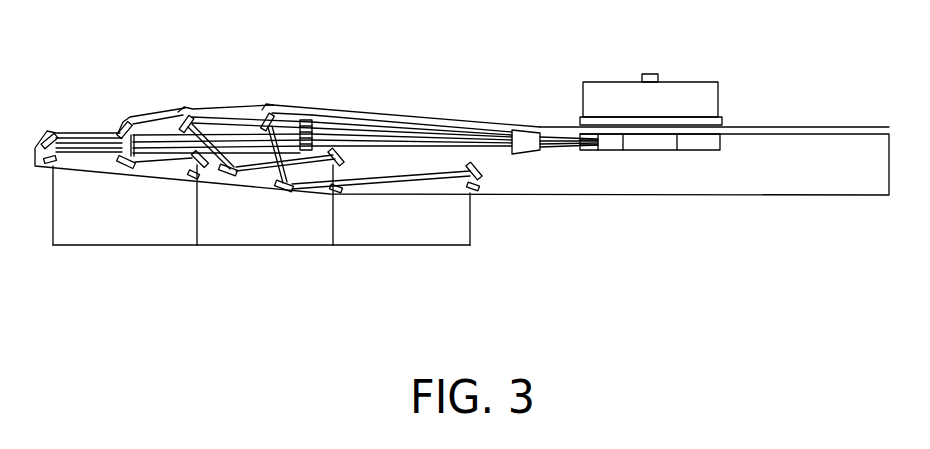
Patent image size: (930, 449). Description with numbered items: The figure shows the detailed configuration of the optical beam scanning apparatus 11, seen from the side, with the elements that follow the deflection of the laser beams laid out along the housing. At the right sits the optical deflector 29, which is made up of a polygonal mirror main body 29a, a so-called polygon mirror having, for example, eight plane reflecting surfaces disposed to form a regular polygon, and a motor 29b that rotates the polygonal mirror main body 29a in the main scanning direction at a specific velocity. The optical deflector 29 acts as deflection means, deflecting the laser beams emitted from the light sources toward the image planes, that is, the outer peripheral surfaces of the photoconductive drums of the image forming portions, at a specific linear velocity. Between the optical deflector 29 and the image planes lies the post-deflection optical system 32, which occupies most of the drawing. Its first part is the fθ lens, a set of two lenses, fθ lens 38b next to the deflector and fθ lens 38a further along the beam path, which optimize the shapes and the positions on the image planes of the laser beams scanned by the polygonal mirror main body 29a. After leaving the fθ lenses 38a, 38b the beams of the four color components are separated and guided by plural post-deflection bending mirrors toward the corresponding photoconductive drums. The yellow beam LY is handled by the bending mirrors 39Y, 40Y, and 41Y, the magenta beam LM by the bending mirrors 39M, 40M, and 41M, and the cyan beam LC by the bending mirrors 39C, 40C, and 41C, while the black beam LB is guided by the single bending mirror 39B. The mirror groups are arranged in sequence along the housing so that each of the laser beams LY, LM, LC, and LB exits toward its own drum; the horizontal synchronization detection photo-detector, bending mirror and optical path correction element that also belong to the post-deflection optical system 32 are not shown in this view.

The post-deflection optical system 32 is at (437, 33).
The optical deflector 29 is at (683, 86).
The polygonal mirror main body 29a is at (720, 143).
The motor 29b is at (720, 97).
The optical beam scanning apparatus 11 is at (829, 127).
The fθ lens 38a is at (305, 120).
The fθ lens 38b is at (527, 130).
The post-deflection bending mirror 39B is at (42, 135).
The post-deflection bending mirror 39C is at (119, 121).
The post-deflection bending mirror 39M is at (184, 110).
The post-deflection bending mirror 39Y is at (266, 112).
The post-deflection bending mirror 40C is at (122, 167).
The post-deflection bending mirror 41C is at (188, 161).
The post-deflection bending mirror 40M is at (225, 174).
The post-deflection bending mirror 40Y is at (283, 191).
The post-deflection bending mirror 41M is at (345, 168).
The post-deflection bending mirror 41Y is at (482, 170).
The laser beam LB is at (54, 222).
The laser beam LC is at (197, 265).
The laser beam LM is at (336, 265).
The laser beam LY is at (473, 265).